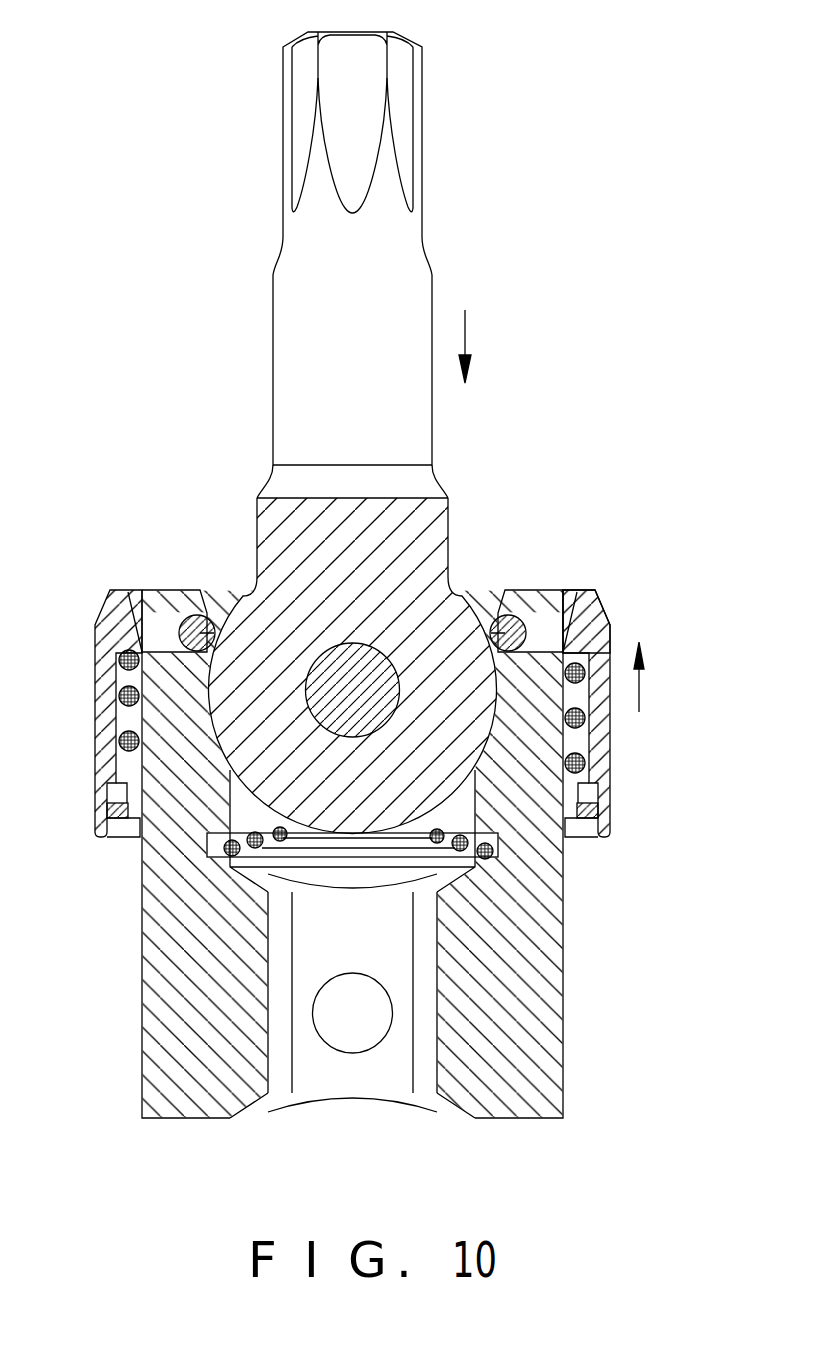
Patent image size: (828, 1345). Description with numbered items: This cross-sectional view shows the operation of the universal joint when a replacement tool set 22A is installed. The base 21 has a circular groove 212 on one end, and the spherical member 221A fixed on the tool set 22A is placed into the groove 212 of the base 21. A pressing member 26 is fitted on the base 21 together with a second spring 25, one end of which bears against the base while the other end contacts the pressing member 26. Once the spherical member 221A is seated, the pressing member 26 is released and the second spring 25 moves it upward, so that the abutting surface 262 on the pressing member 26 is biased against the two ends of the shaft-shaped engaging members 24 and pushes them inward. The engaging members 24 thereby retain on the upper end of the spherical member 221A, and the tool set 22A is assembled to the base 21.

The base 21 is at (547, 968).
The circular groove 212 is at (460, 808).
The tool set 22A is at (300, 352).
The spherical member 221A is at (277, 640).
The engaging member 24 is at (515, 622).
The second spring 25 is at (116, 697).
The pressing member 26 is at (600, 752).
The abutting surface 262 is at (575, 638).